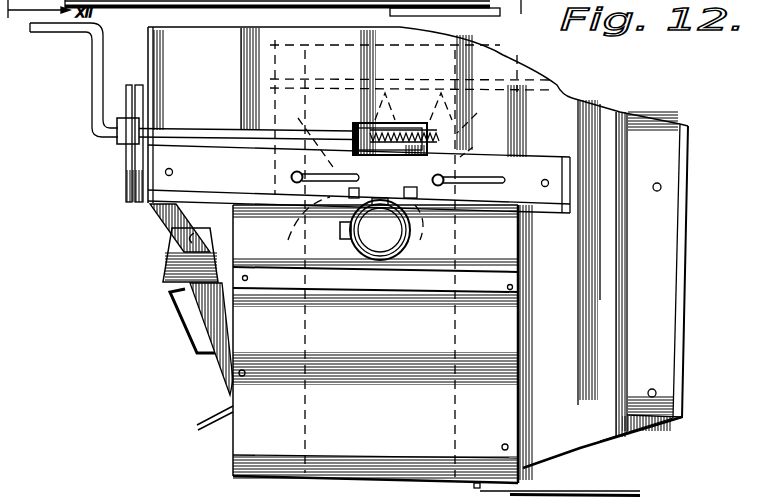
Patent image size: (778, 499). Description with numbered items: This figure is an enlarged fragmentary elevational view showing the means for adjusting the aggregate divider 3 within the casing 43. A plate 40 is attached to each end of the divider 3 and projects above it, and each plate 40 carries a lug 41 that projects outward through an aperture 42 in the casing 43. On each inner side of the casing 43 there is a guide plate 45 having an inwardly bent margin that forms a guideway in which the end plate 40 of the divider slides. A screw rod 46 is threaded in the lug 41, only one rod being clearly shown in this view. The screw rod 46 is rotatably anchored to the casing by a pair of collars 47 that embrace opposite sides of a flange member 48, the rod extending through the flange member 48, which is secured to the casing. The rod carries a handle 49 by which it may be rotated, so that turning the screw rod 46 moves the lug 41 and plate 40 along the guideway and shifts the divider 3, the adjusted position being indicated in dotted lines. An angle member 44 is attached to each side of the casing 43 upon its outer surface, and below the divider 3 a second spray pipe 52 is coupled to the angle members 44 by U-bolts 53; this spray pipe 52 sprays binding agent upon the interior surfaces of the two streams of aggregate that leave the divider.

The divider 3 is at (385, 130).
The plate 40 is at (477, 65).
The lug 41 is at (370, 127).
The aperture 42 is at (400, 132).
The casing 43 is at (570, 143).
The angle member 44 is at (245, 173).
The guide plate 45 is at (503, 65).
The screw rod 46 is at (210, 140).
The collar 47 is at (120, 143).
The flange member 48 is at (124, 88).
The handle 49 is at (88, 37).
The second spray pipe 52 is at (388, 255).
The U-bolt 53 is at (342, 223).